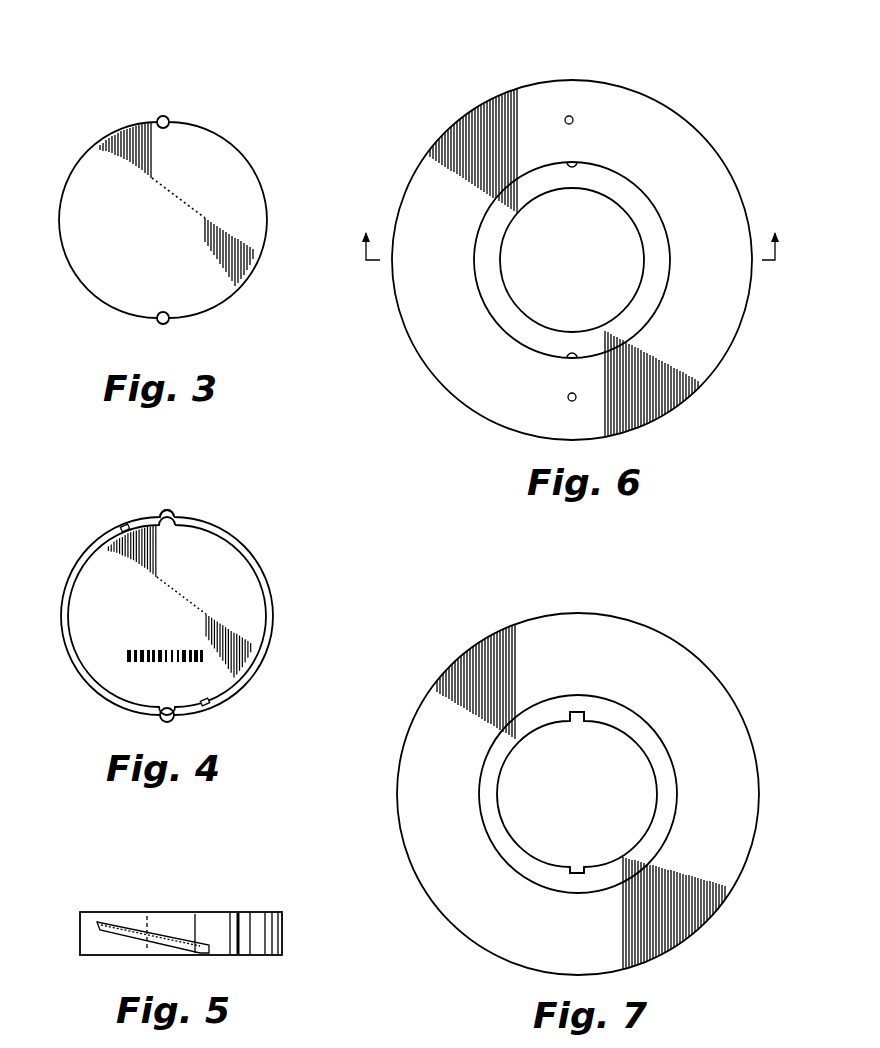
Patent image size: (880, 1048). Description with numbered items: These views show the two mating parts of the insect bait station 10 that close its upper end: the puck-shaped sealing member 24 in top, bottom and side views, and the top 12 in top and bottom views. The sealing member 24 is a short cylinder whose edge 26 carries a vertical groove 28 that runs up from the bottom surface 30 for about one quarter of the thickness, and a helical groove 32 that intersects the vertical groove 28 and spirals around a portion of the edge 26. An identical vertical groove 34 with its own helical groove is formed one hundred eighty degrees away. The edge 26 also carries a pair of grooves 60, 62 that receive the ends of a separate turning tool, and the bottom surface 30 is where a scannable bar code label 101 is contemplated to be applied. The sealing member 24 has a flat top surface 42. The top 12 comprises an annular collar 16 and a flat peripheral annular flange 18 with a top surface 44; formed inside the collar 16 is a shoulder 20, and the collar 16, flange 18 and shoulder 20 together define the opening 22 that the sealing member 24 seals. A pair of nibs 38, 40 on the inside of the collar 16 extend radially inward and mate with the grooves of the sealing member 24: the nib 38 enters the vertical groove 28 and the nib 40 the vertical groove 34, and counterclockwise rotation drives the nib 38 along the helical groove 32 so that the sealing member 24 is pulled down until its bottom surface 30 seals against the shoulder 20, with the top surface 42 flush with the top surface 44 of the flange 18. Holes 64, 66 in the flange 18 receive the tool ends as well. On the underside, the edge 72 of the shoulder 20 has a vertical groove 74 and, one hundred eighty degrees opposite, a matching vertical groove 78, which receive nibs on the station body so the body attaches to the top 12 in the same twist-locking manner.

In FIG. 6, the insect bait station 10 is at (571, 230).
In FIG. 6, the top 12 is at (712, 405).
In FIG. 7, the top 12 is at (446, 647).
In FIG. 7, the annular collar 16 is at (660, 803).
In FIG. 6, the annular flange 18 is at (718, 185).
In FIG. 7, the annular flange 18 is at (720, 853).
In FIG. 6, the shoulder 20 is at (643, 313).
In FIG. 6, the opening 22 is at (606, 220).
In FIG. 7, the opening 22 is at (608, 768).
In FIG. 3, the sealing member 24 is at (227, 175).
In FIG. 4, the sealing member 24 is at (243, 600).
In FIG. 3, the edge 26 is at (93, 152).
In FIG. 4, the edge 26 is at (239, 546).
In FIG. 5, the edge 26 is at (74, 916).
In FIG. 4, the vertical groove 28 is at (121, 527).
In FIG. 5, the vertical groove 28 is at (212, 955).
In FIG. 4, the bottom surface 30 is at (172, 627).
In FIG. 5, the bottom surface 30 is at (118, 955).
In FIG. 5, the helical groove 32 is at (173, 938).
In FIG. 4, the vertical groove 34 is at (210, 704).
In FIG. 6, the nib 38 is at (570, 353).
In FIG. 6, the nib 40 is at (568, 168).
In FIG. 3, the top surface 42 is at (167, 231).
In FIG. 5, the top surface 42 is at (197, 912).
In FIG. 6, the top surface 44 is at (422, 270).
In FIG. 3, the groove 60 is at (158, 120).
In FIG. 4, the groove 60 is at (167, 711).
In FIG. 3, the groove 62 is at (162, 320).
In FIG. 4, the groove 62 is at (162, 518).
In FIG. 5, the groove 62 is at (253, 920).
In FIG. 6, the hole 64 is at (573, 118).
In FIG. 6, the hole 66 is at (567, 395).
In FIG. 7, the edge 72 is at (511, 787).
In FIG. 7, the vertical groove 74 is at (581, 874).
In FIG. 7, the vertical groove 78 is at (568, 713).
In FIG. 4, the bar code 101 is at (127, 655).